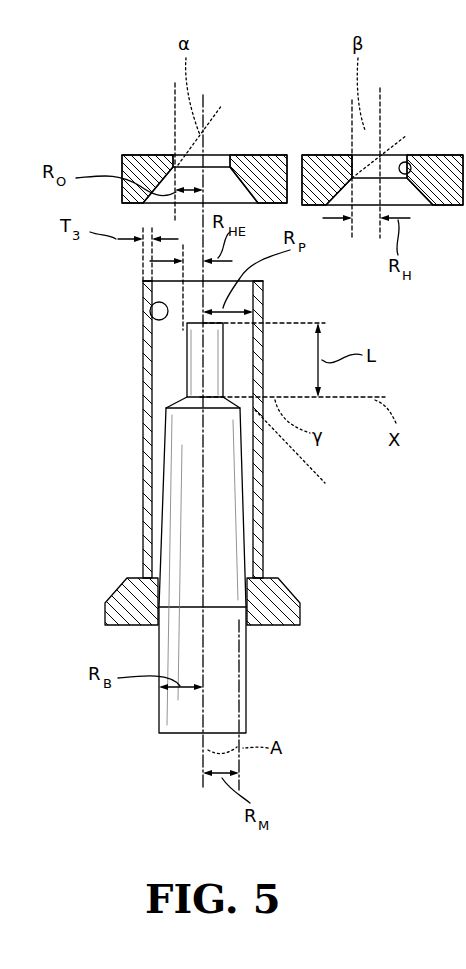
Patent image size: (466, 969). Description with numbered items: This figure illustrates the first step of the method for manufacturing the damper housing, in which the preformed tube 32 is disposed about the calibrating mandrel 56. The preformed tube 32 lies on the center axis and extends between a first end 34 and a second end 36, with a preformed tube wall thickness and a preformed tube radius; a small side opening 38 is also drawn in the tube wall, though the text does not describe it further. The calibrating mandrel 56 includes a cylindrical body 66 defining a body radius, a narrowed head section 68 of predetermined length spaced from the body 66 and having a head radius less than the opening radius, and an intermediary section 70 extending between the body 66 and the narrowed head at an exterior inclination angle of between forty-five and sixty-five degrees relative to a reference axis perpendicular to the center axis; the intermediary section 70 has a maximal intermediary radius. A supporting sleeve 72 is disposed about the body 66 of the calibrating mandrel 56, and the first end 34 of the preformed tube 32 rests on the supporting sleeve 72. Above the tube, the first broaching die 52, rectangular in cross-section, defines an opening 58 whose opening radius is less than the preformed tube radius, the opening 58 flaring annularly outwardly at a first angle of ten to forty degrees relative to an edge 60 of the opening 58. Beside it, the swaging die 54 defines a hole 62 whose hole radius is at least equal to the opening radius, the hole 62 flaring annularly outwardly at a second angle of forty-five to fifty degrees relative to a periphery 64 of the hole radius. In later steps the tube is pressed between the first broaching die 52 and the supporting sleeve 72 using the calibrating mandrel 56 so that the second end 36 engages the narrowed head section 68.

The first broaching die 52 is at (130, 160).
The swaging die 54 is at (446, 160).
The opening 58 is at (220, 158).
The edge 60 is at (163, 160).
The hole 62 is at (411, 165).
The periphery 64 is at (346, 160).
The preformed tube 32 is at (138, 472).
The first end 34 is at (262, 572).
The second end 36 is at (256, 281).
The side opening 38 is at (150, 318).
The calibrating mandrel 56 is at (250, 697).
The body 66 is at (230, 663).
The narrowed head section 68 is at (187, 348).
The intermediary section 70 is at (175, 402).
The supporting sleeve 72 is at (110, 605).